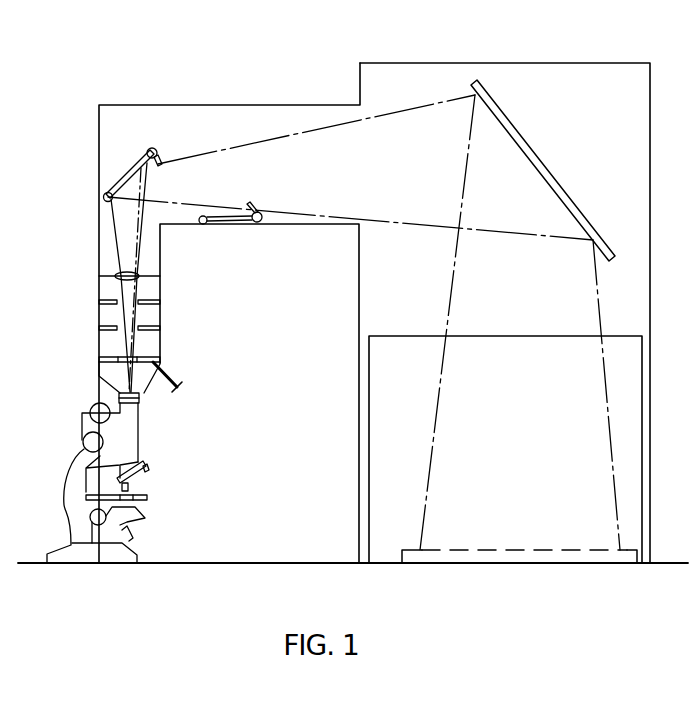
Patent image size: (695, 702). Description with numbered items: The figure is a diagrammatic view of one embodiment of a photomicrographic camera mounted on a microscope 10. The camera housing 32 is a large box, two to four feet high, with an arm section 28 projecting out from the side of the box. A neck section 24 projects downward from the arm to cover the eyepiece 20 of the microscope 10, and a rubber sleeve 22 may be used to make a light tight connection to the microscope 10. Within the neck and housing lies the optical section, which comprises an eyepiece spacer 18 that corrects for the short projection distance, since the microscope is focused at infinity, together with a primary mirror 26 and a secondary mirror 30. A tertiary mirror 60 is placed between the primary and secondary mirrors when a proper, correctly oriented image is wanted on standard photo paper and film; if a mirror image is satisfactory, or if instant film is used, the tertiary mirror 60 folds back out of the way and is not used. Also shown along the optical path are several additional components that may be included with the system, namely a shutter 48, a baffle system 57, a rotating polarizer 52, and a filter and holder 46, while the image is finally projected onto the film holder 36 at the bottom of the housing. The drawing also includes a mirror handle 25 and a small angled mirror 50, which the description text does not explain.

The microscope 10 is at (84, 478).
The eyepiece spacer 18 is at (118, 406).
The eyepiece 20 is at (99, 377).
The rubber sleeve 22 is at (143, 394).
The neck section 24 is at (100, 323).
The mirror adjustment handle 25 is at (160, 163).
The primary mirror 26 is at (125, 177).
The arm section 28 is at (302, 104).
The secondary mirror 30 is at (537, 151).
The camera housing 32 is at (490, 63).
The film holder 36 is at (560, 557).
The filter and holder 46 is at (152, 322).
The shutter 48 is at (109, 356).
The beam splitter mirror 50 is at (178, 382).
The rotating polarizer 52 is at (109, 276).
The baffle system 57 is at (100, 300).
The tertiary mirror 60 is at (226, 224).